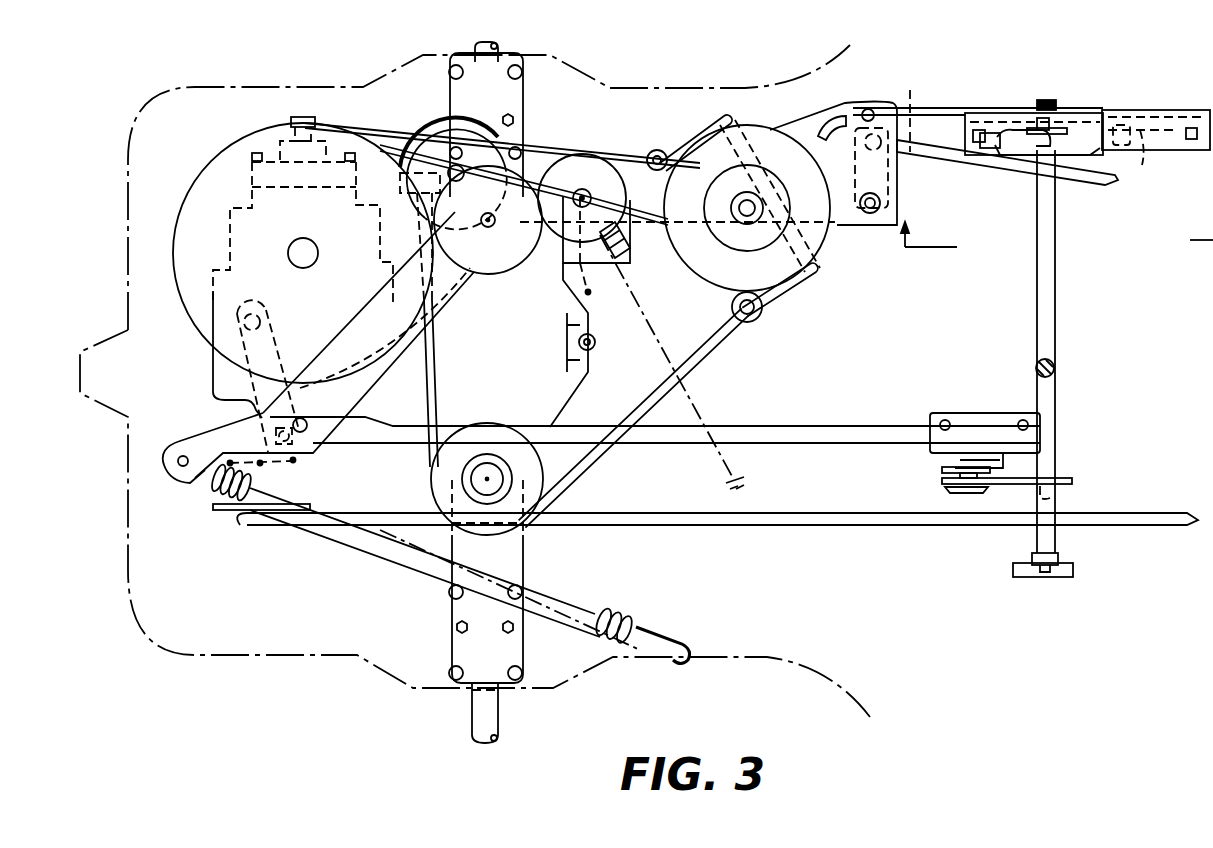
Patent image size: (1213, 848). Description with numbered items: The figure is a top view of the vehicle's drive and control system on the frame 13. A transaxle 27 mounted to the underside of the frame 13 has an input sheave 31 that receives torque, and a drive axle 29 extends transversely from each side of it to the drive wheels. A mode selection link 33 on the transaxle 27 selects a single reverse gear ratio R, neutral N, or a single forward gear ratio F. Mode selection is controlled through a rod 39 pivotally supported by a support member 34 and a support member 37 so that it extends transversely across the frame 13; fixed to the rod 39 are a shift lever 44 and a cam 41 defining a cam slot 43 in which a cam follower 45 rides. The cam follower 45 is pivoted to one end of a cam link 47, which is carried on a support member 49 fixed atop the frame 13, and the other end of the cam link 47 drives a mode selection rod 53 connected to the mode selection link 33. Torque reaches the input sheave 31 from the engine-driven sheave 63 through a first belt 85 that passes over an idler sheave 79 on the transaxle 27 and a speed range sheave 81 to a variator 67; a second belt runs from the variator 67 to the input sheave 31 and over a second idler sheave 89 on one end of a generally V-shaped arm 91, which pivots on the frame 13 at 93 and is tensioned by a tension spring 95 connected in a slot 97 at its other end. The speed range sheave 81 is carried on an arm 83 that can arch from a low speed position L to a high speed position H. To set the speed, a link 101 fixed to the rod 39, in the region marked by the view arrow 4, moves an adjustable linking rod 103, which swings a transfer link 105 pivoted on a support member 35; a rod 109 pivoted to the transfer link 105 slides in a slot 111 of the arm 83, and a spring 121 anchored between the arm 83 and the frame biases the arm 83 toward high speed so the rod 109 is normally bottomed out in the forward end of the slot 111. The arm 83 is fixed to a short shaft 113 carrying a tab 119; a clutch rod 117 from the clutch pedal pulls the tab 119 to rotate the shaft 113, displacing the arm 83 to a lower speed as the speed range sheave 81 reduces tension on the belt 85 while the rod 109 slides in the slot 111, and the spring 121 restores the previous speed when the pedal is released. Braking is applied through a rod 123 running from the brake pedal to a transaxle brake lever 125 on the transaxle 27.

The frame 13 is at (718, 88).
The drive axle 29 is at (500, 50).
The input sheave 31 is at (305, 252).
The transaxle 27 is at (213, 364).
The mode selection link 33 is at (283, 356).
The support member 34 is at (1015, 112).
The support member 35 is at (1150, 112).
The support member 37 is at (1058, 577).
The rod 39 is at (1058, 283).
The cam 41 is at (1075, 482).
The cam slot 43 is at (1055, 497).
The shift lever 44 is at (1036, 366).
The cam follower 45 is at (940, 490).
The cam link 47 is at (1040, 455).
The support member 49 is at (930, 413).
The mode selection rod 53 is at (816, 425).
The sheave 63 is at (512, 535).
The variator 67 is at (828, 236).
The idler sheave 79 is at (445, 120).
The speed range sheave 81 is at (543, 157).
The arm 83 is at (628, 167).
The first belt 85 is at (583, 462).
The second idler sheave 89 is at (522, 273).
The V-shaped arm 91 is at (385, 302).
The pivot mounting 93 is at (306, 432).
The tension spring 95 is at (360, 550).
The slot 97 is at (180, 443).
The link 101 is at (986, 158).
The adjustable linking rod 103 is at (1015, 153).
The transfer link 105 is at (1143, 163).
The rod 109 is at (950, 110).
The slot 111 is at (833, 164).
The short shaft 113 is at (880, 207).
The clutch rod 117 is at (1070, 186).
The tab 119 is at (921, 109).
The spring 121 is at (652, 306).
The rod 123 is at (776, 525).
The transaxle brake lever 125 is at (222, 512).
The section line 4 is at (924, 252).
The low speed position L is at (592, 196).
The high speed position H is at (596, 284).
The neutral N is at (262, 468).
The forward mode gear ratio F is at (293, 465).
The reverse mode gear ratio R is at (208, 490).